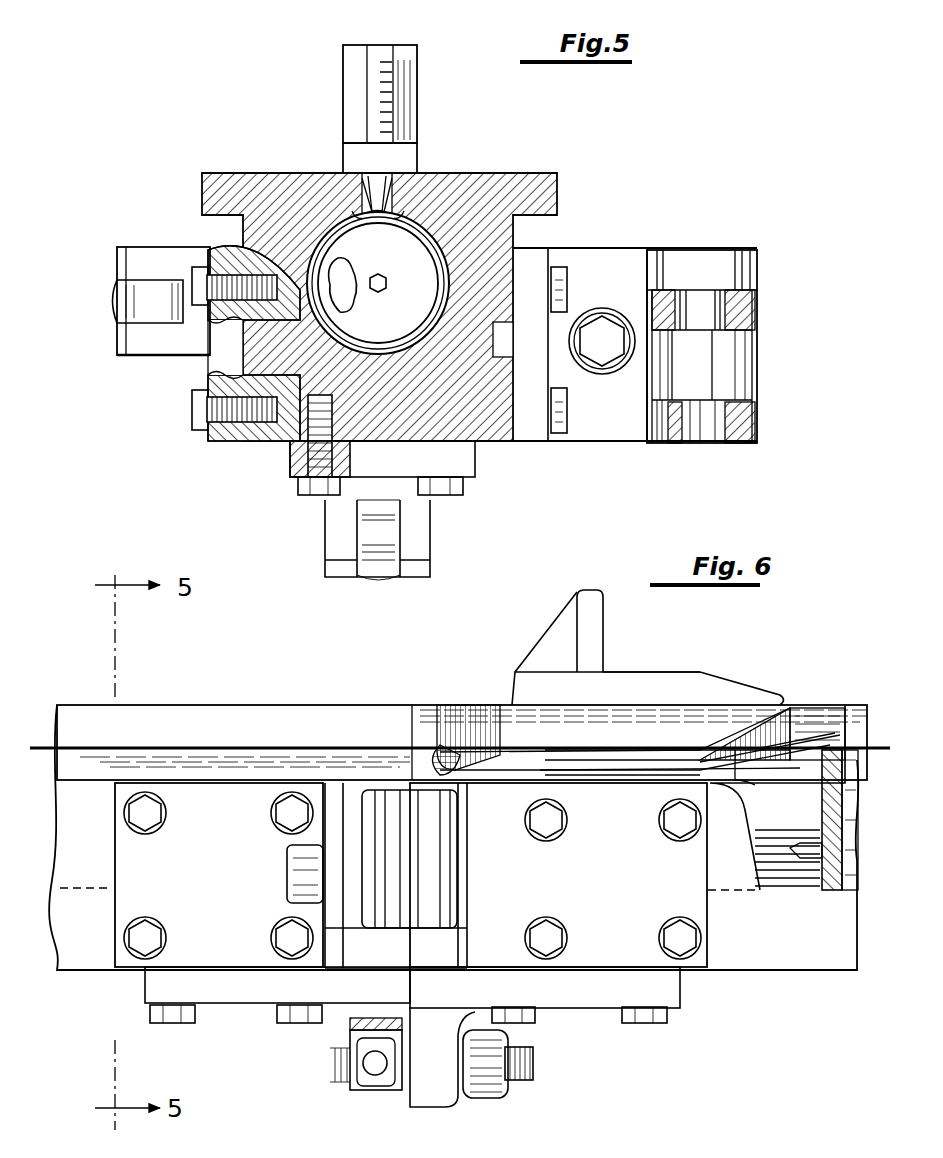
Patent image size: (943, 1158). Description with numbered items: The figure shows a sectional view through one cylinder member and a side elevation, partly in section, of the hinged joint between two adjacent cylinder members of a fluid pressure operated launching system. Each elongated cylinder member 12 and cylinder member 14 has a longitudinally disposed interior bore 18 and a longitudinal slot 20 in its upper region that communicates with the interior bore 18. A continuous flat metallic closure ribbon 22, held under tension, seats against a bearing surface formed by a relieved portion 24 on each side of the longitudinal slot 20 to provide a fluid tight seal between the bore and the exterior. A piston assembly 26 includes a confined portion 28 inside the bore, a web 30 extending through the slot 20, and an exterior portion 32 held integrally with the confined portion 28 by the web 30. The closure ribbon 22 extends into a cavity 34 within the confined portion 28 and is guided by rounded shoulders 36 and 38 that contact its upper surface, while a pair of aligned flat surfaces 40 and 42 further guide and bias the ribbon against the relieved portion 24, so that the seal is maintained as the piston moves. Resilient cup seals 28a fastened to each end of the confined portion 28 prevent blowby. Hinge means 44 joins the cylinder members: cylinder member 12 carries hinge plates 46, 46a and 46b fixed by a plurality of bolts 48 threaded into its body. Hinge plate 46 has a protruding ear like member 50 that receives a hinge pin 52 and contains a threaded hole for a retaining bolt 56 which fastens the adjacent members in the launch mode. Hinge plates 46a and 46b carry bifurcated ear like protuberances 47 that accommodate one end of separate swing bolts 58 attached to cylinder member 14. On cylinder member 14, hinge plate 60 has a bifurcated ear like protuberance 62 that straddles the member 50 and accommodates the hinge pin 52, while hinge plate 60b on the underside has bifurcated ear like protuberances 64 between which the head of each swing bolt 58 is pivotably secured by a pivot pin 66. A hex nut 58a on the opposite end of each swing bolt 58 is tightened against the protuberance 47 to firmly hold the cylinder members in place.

In FIG. 5, the cylinder member 12 is at (290, 438).
In FIG. 6, the cylinder member 12 is at (855, 706).
In FIG. 5, the cylinder member 14 is at (203, 185).
In FIG. 6, the cylinder member 14 is at (258, 705).
In FIG. 6, the interior bore 18 is at (57, 888).
In FIG. 5, the longitudinal slot 20 is at (405, 190).
In FIG. 6, the longitudinal slot 20 is at (465, 750).
In FIG. 5, the closure ribbon 22 is at (392, 178).
In FIG. 6, the closure ribbon 22 is at (35, 748).
In FIG. 5, the relieved portion 24 is at (420, 225).
In FIG. 6, the relieved portion 24 is at (475, 750).
In FIG. 5, the piston assembly 26 is at (338, 156).
In FIG. 6, the piston assembly 26 is at (705, 670).
In FIG. 5, the confined portion 28 is at (342, 270).
In FIG. 6, the confined portion 28 is at (510, 770).
In FIG. 5, the resilient cup seals 28a is at (452, 290).
In FIG. 6, the resilient cup seals 28a is at (445, 748).
In FIG. 5, the web 30 is at (368, 176).
In FIG. 6, the web 30 is at (665, 751).
In FIG. 5, the exterior portion 32 is at (343, 78).
In FIG. 6, the exterior portion 32 is at (603, 650).
In FIG. 6, the cavity 34 is at (788, 760).
In FIG. 6, the shoulder 36 is at (700, 760).
In FIG. 6, the shoulder 38 is at (552, 775).
In FIG. 6, the flat surface 40 is at (449, 859).
In FIG. 6, the flat surface 42 is at (822, 835).
In FIG. 5, the hinge means 44 is at (652, 240).
In FIG. 6, the hinge plate 46 is at (539, 879).
In FIG. 5, the hinge plate 46a is at (208, 438).
In FIG. 5, the hinge plate 46b is at (296, 477).
In FIG. 6, the hinge plate 46b is at (613, 1001).
In FIG. 5, the bifurcated ear like protuberance 47 is at (117, 355).
In FIG. 6, the bifurcated ear like protuberance 47 is at (430, 1107).
In FIG. 5, the bolts 48 is at (222, 372).
In FIG. 6, the bolts 48 is at (167, 813).
In FIG. 5, the ear like member 50 is at (714, 365).
In FIG. 6, the ear like member 50 is at (465, 872).
In FIG. 5, the hinge pin 52 is at (702, 304).
In FIG. 5, the retaining bolt 56 is at (617, 354).
In FIG. 6, the retaining bolt 56 is at (288, 858).
In FIG. 5, the swing bolt 58 is at (150, 305).
In FIG. 6, the swing bolt 58 is at (533, 1070).
In FIG. 6, the hex nut 58a is at (508, 1098).
In FIG. 5, the hinge plate 60 is at (596, 408).
In FIG. 6, the hinge plate 60 is at (172, 879).
In FIG. 5, the hinge plate 60b is at (427, 473).
In FIG. 6, the hinge plate 60b is at (255, 1003).
In FIG. 5, the bifurcated ear like protuberance 62 is at (718, 250).
In FIG. 6, the bifurcated ear like protuberance 62 is at (337, 813).
In FIG. 5, the bifurcated ear like protuberance 64 is at (177, 351).
In FIG. 6, the bifurcated ear like protuberance 64 is at (373, 1095).
In FIG. 6, the pivot pin 66 is at (365, 1065).